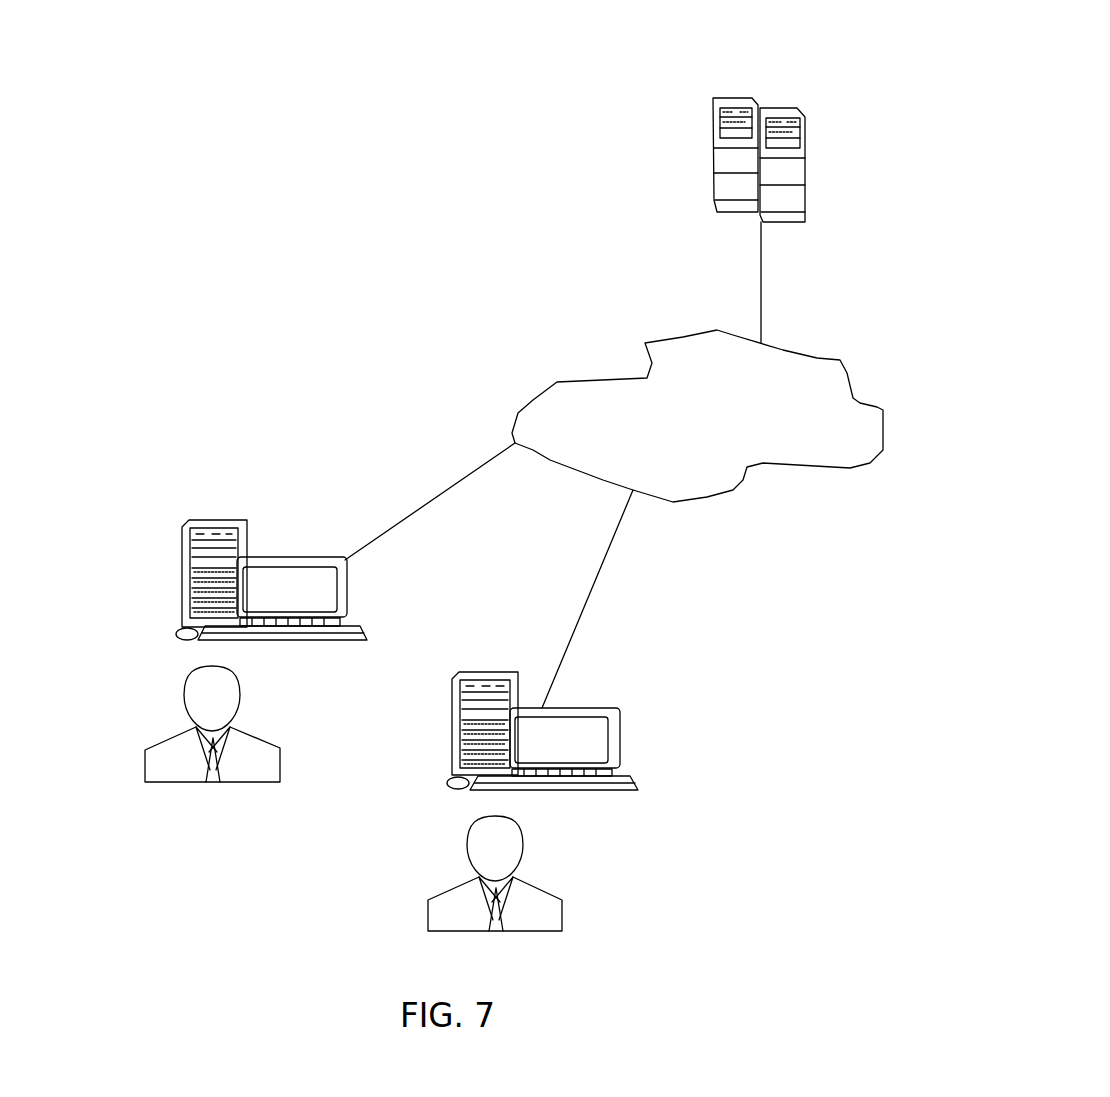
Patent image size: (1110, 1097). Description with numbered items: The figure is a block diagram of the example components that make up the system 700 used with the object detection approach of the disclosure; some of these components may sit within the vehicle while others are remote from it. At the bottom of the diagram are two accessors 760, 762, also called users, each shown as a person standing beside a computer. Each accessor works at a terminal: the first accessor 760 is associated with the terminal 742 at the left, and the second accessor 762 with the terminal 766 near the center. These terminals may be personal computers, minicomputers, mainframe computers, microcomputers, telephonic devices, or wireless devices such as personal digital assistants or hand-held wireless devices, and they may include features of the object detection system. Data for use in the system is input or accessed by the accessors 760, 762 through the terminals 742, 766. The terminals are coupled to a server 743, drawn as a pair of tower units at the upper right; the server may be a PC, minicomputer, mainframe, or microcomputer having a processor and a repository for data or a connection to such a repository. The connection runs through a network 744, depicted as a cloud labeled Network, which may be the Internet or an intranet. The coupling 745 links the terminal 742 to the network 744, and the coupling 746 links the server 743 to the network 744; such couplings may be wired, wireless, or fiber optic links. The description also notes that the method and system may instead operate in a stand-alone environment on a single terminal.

The system 700 is at (275, 131).
The terminal 742 is at (180, 532).
The server 743 is at (797, 110).
The network 744 is at (648, 363).
The coupling 745 is at (442, 502).
The coupling 746 is at (760, 267).
The accessor 760 is at (145, 750).
The accessor 762 is at (565, 903).
The terminal 766 is at (622, 737).